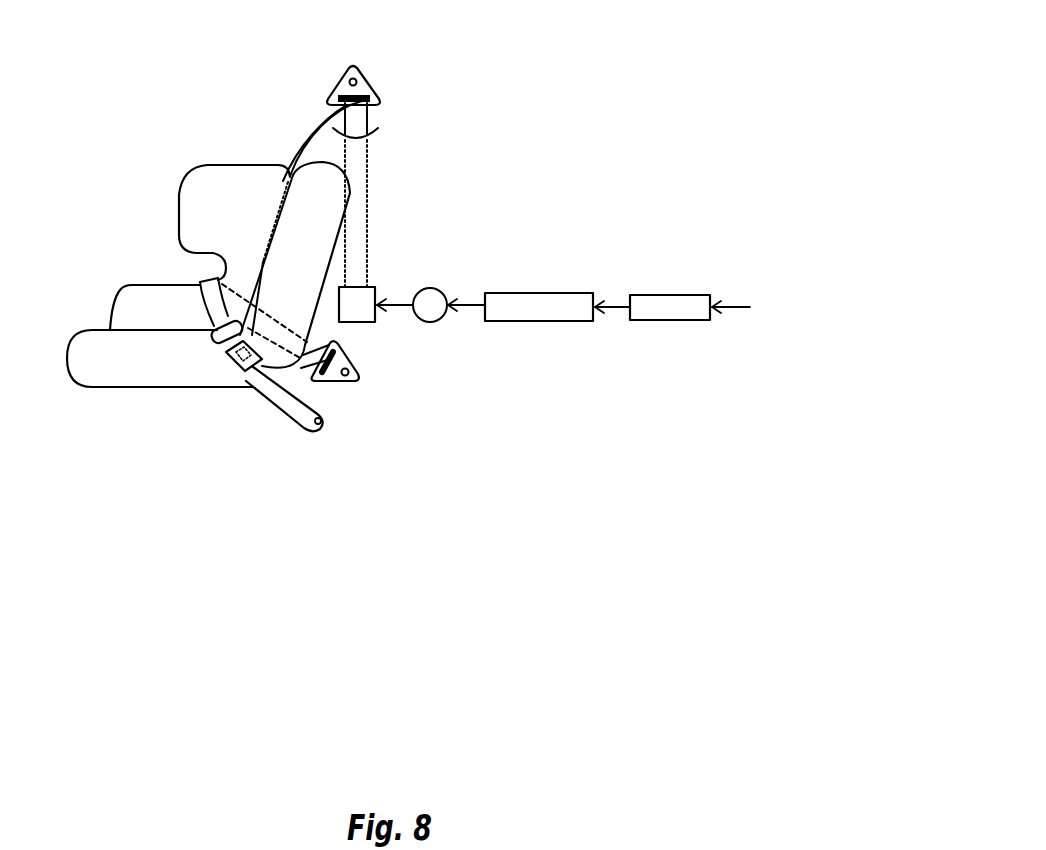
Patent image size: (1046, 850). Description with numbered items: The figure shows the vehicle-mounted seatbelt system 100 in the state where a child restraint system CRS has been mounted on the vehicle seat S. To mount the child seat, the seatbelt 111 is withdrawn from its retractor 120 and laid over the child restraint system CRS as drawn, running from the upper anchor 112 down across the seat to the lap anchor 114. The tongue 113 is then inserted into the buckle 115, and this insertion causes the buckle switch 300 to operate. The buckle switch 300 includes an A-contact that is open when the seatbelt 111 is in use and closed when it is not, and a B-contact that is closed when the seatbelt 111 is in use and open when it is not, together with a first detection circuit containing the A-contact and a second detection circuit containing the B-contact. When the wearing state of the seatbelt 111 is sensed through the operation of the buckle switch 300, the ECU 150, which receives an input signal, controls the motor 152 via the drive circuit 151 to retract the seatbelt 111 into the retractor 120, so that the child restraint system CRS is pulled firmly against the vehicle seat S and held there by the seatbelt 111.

The seat belt apparatus 100 is at (688, 45).
The child restraint system CRS is at (181, 196).
The vehicle seat S is at (310, 205).
The seatbelt 111 is at (323, 128).
The shoulder anchor 112 is at (370, 87).
The tongue 113 is at (223, 348).
The lap anchor 114 is at (340, 383).
The buckle 115 is at (250, 378).
The retractor 120 is at (362, 313).
The ECU 150 is at (662, 294).
The drive circuit 151 is at (541, 292).
The motor 152 is at (432, 287).
The buckle switch 300 is at (233, 367).